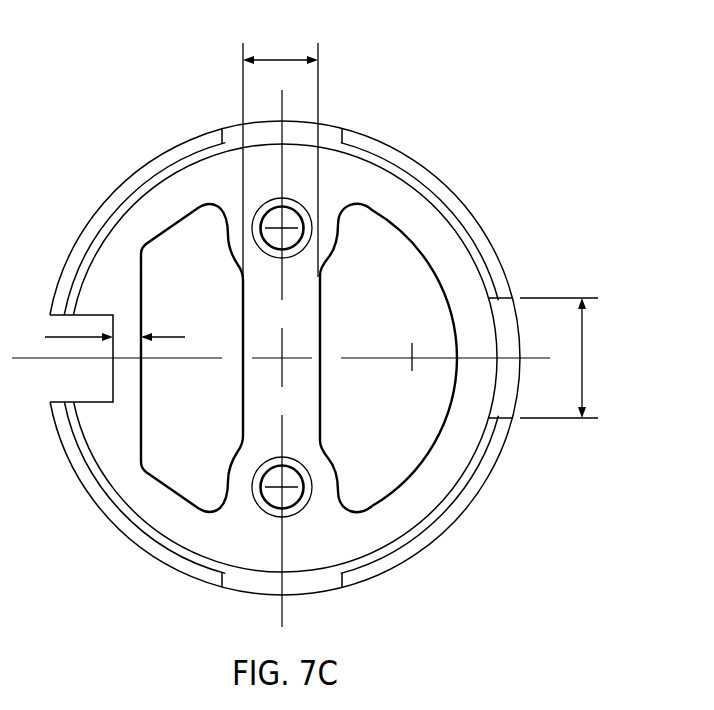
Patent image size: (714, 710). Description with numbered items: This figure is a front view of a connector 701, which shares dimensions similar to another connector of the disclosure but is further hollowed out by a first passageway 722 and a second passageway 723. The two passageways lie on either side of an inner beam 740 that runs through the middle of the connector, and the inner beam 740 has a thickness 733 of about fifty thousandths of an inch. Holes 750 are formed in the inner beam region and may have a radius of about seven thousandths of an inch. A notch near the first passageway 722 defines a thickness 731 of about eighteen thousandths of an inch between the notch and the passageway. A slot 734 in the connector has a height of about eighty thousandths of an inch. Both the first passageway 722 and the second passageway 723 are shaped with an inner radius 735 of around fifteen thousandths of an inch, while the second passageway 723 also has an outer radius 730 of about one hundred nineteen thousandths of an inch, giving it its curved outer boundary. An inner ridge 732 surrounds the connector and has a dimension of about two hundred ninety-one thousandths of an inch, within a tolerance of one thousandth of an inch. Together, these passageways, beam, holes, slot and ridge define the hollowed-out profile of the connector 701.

The connector 701 is at (452, 84).
The first passageway 722 is at (203, 500).
The second passageway 723 is at (407, 442).
The outer radius 730 is at (407, 233).
The thickness 731 is at (170, 337).
The inner ridge 732 is at (125, 205).
The thickness 733 is at (282, 57).
The slot 734 is at (582, 361).
The inner radius 735 is at (354, 512).
The inner beam 740 is at (307, 333).
The holes 750 is at (262, 212).